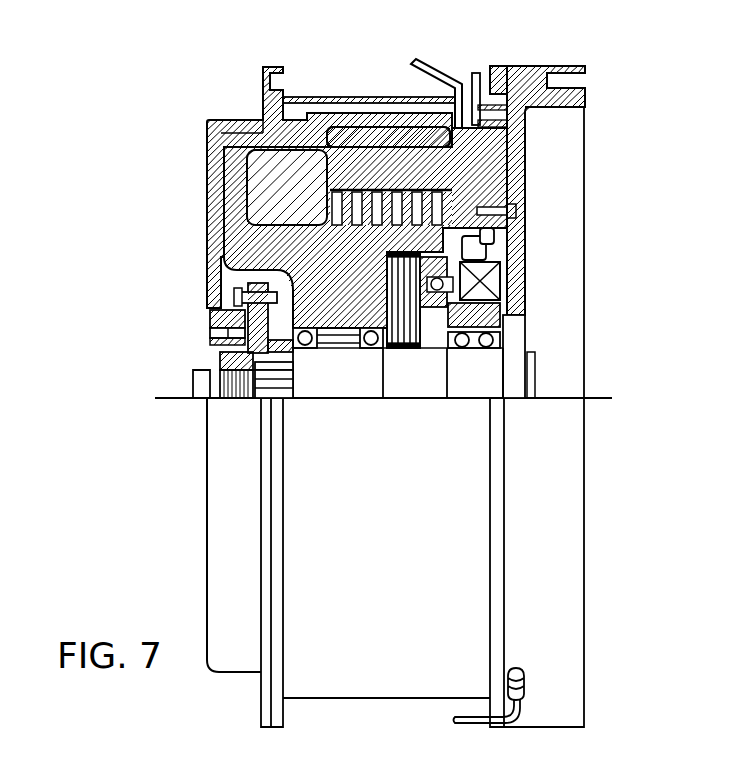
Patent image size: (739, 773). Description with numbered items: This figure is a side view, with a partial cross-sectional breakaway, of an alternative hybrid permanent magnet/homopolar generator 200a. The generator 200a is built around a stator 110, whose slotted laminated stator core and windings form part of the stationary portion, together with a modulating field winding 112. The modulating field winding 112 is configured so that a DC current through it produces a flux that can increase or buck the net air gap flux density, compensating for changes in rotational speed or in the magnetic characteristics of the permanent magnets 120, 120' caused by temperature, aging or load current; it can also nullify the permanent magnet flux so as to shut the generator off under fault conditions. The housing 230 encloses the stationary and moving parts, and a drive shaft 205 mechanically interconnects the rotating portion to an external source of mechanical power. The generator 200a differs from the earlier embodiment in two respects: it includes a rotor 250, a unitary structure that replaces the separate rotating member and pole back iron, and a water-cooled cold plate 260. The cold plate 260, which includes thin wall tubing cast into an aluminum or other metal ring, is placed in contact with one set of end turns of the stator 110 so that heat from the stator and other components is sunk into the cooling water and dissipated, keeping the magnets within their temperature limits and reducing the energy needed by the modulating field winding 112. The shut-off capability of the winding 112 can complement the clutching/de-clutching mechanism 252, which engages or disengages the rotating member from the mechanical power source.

The hybrid permanent magnet/homopolar generator 200a is at (110, 167).
The stator 110 is at (245, 130).
The modulating field winding 112 is at (262, 208).
The magnet 120 is at (341, 94).
The magnet 120' is at (388, 137).
The housing 230 is at (358, 95).
The rotor 250 is at (392, 108).
The water-cooled cold plate 260 is at (525, 112).
The drive shaft 205 is at (532, 323).
The clutching/de-clutching mechanism 252 is at (425, 313).